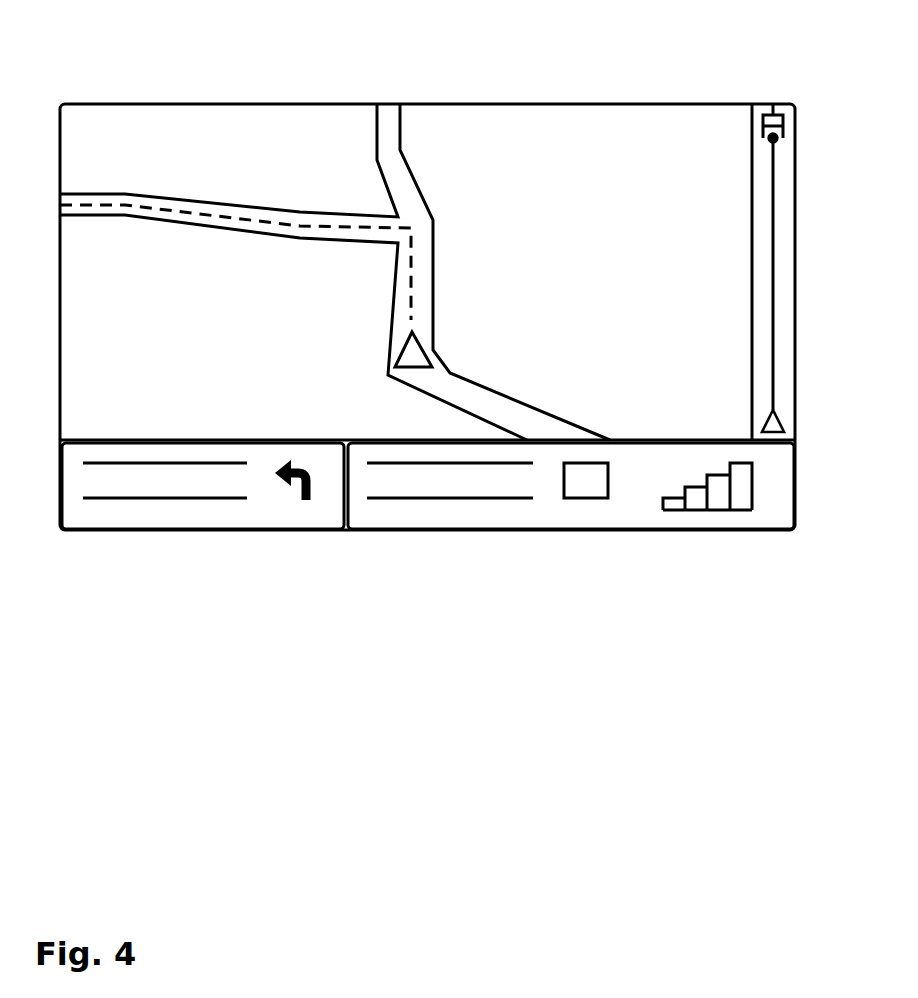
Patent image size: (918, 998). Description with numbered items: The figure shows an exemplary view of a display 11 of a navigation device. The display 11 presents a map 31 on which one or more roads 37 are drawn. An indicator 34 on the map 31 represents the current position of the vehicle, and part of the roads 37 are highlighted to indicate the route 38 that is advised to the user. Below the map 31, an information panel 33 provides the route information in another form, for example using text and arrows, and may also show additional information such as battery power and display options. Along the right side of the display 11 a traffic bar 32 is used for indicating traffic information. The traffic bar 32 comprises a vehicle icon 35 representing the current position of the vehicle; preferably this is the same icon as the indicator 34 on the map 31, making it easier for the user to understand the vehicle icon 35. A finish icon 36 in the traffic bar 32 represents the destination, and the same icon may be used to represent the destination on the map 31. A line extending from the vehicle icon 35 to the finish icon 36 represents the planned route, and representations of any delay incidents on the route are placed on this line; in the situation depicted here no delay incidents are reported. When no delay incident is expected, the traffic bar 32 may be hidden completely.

The display 11 is at (201, 38).
The map 31 is at (558, 168).
The traffic bar 32 is at (748, 273).
The information panel 33 is at (472, 513).
The indicator 34 is at (430, 348).
The vehicle icon 35 is at (765, 425).
The finish icon 36 is at (773, 115).
The roads 37 is at (388, 185).
The route 38 is at (300, 227).